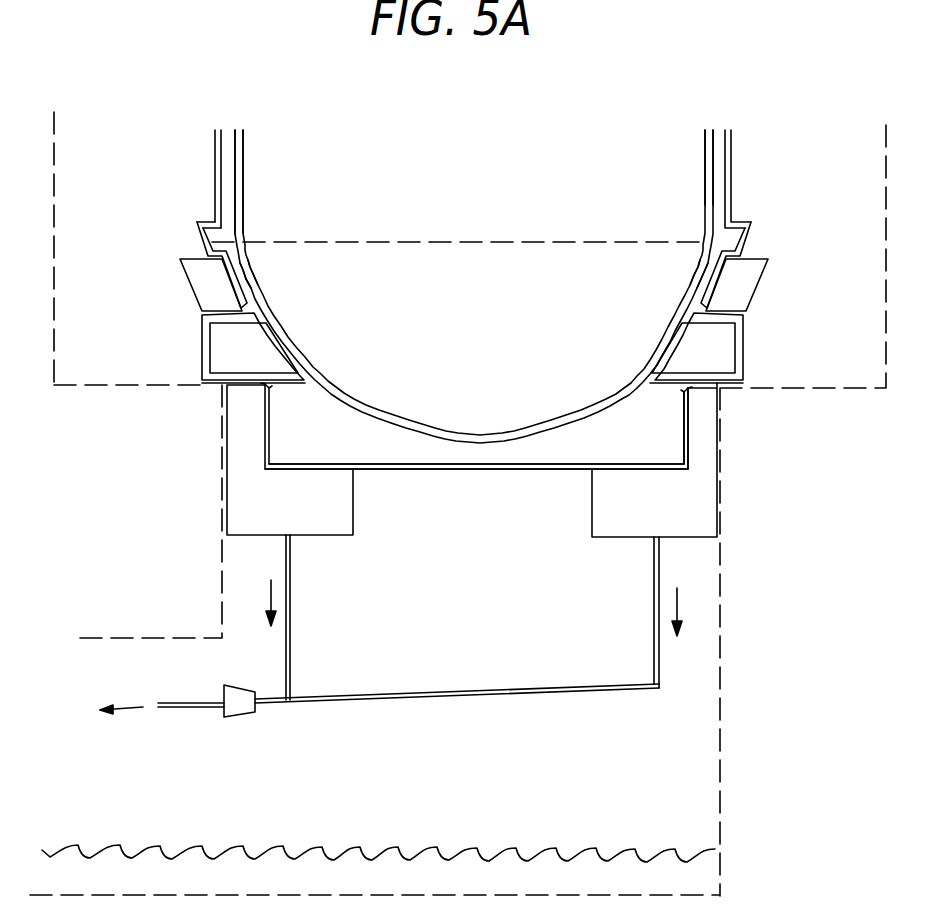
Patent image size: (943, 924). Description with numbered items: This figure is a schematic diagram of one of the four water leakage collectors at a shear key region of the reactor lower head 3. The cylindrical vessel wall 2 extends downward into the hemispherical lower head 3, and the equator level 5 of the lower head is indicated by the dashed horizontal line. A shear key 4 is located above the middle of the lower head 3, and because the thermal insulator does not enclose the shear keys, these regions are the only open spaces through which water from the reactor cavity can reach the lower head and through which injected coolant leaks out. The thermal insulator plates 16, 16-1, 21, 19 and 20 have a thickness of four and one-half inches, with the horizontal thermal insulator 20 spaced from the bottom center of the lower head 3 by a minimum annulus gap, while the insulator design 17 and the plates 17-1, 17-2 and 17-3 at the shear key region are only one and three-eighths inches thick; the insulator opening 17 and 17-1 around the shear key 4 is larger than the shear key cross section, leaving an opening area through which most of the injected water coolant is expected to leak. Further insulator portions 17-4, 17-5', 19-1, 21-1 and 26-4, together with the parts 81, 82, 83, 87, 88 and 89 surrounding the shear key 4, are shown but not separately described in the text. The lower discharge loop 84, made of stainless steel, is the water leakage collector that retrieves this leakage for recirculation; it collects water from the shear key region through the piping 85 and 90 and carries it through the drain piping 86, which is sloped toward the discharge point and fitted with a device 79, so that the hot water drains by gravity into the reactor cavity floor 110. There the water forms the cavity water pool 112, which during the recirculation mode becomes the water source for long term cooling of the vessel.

The cylindrical vessel wall 2 is at (250, 183).
The reactor lower head 3 is at (530, 428).
The shear key 4 is at (262, 355).
The equator level 5 is at (530, 225).
The thermal insulator plate 16 is at (213, 143).
The thermal insulator plate 16-1 is at (205, 212).
The insulator design at shear key region 17 is at (262, 307).
The insulator plate at shear key region 17-1 is at (247, 219).
The insulator plate at shear key region 17-2 is at (242, 276).
The insulator plate at shear key region 17-3 is at (285, 390).
The liner right curved portion 17-4 is at (696, 302).
The liner right lower portion 17-5' is at (641, 423).
The thermal insulator plate 19 is at (265, 455).
The tray side wall 19-1 is at (690, 430).
The horizontal thermal insulator 20 is at (432, 470).
The thermal insulator plate 21 is at (198, 246).
The right collar 21-1 is at (742, 244).
The right outer tube 26-4 is at (760, 197).
The valve 79 is at (250, 713).
The left wedge block 81 is at (190, 297).
The left heater block 82 is at (203, 357).
The left support plate 83 is at (215, 390).
The lower discharge loop 84 is at (255, 532).
The left drain conduit 85 is at (290, 642).
The drain piping 86 is at (763, 296).
The right heater block 87 is at (745, 357).
The right support plate 88 is at (742, 381).
The right support 89 is at (697, 530).
The right drain conduit 90 is at (653, 643).
The reactor cavity floor 110 is at (722, 770).
The cavity water pool 112 is at (222, 607).